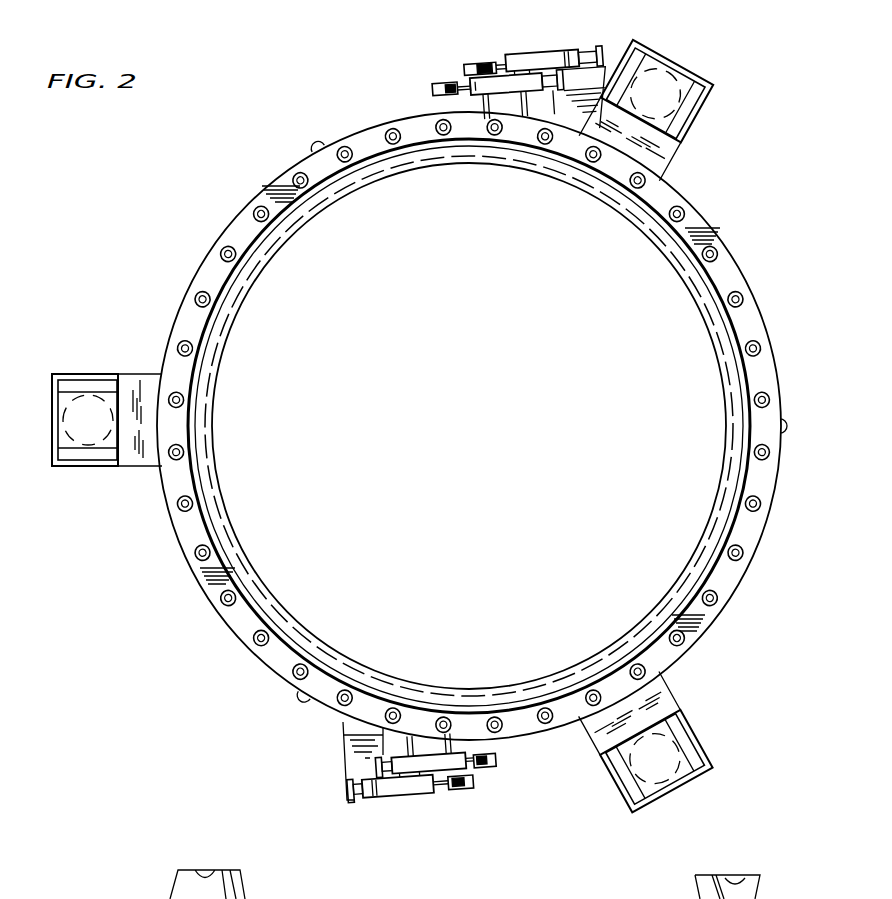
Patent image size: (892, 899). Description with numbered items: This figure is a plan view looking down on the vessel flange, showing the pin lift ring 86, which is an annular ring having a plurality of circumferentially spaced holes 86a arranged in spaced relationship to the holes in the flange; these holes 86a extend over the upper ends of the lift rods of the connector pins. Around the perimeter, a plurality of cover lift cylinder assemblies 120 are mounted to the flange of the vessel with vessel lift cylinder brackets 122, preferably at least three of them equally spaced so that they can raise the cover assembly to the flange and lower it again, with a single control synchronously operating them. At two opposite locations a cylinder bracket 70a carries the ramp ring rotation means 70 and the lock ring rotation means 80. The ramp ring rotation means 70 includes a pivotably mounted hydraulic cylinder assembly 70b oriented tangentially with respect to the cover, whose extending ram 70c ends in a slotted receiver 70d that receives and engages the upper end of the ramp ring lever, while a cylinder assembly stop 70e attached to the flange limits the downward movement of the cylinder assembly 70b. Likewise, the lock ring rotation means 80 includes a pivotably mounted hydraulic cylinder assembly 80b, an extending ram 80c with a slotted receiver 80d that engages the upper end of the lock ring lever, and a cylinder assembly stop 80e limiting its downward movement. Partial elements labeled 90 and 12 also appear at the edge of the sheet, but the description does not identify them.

The ramp ring rotation means 70 is at (492, 97).
The cylinder bracket 70a is at (607, 82).
The hydraulic cylinder assembly 70b is at (542, 95).
The extending ram 70c is at (486, 97).
The slotted receiver 70d is at (432, 88).
The cylinder assembly stop 70e is at (499, 97).
The lock ring rotation means 80 is at (565, 45).
The hydraulic cylinder assembly 80b is at (530, 56).
The extending ram 80c is at (480, 62).
The slotted receiver 80d is at (466, 66).
The cylinder assembly stop 80e is at (523, 97).
The pin lift ring 86 is at (186, 305).
The circumferentially spaced holes 86a is at (231, 246).
The cover lift cylinder assembly 120 is at (713, 77).
The vessel lift cylinder bracket 122 is at (672, 142).
The frame member 90 is at (180, 884).
The apparatus 12 is at (752, 887).